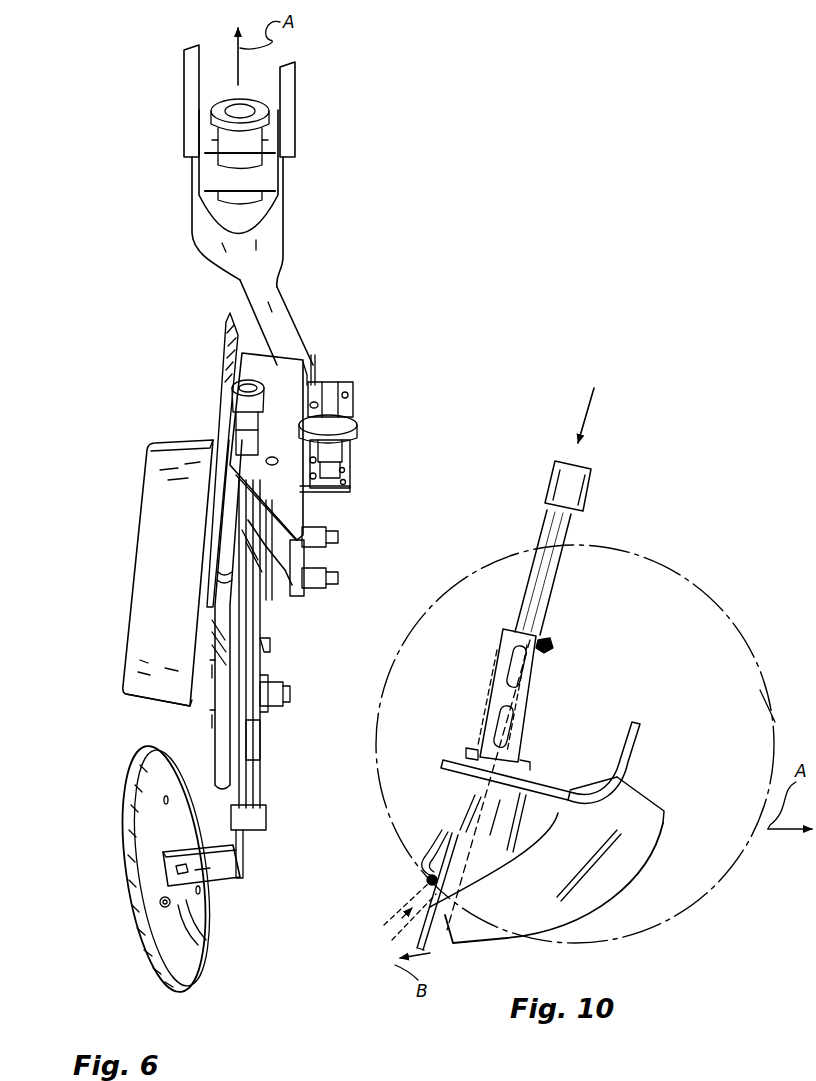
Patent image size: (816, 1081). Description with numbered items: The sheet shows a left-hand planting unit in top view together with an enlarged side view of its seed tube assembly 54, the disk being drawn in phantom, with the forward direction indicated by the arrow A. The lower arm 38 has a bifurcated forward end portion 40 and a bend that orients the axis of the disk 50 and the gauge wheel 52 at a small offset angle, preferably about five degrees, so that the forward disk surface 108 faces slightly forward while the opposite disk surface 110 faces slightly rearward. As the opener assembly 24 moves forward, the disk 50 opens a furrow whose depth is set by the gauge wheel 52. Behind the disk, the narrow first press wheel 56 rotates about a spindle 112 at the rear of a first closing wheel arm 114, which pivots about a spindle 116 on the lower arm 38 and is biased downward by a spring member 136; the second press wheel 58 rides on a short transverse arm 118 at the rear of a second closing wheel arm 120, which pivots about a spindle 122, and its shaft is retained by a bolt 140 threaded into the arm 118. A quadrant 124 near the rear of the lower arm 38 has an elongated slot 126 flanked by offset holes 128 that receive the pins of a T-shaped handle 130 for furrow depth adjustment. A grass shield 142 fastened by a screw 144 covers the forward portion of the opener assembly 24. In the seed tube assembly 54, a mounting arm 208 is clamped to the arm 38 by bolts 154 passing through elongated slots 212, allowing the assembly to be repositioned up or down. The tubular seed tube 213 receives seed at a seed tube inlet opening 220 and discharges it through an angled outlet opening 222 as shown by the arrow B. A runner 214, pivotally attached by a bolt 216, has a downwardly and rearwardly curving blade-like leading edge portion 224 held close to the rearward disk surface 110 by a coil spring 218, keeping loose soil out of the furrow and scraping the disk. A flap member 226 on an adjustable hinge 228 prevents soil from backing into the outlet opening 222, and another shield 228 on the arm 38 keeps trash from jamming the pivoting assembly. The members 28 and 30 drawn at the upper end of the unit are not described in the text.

In FIG. 6, the opener assembly 24 is at (115, 613).
In FIG. 6, the mounting bracket 28 is at (168, 186).
In FIG. 6, the pivot cup 30 is at (296, 106).
In FIG. 6, the lower arm 38 is at (285, 290).
In FIG. 6, the bifurcated forward end portion 40 is at (285, 215).
In FIG. 6, the disk 50 is at (225, 328).
In FIG. 10, the disk 50 is at (702, 915).
In FIG. 6, the gauge wheel 52 is at (125, 523).
In FIG. 10, the seed tube assembly 54 is at (612, 910).
In FIG. 6, the first press wheel 56 is at (212, 752).
In FIG. 6, the second press wheel 58 is at (125, 792).
In FIG. 6, the disk surface 108 is at (240, 373).
In FIG. 6, the opposite disk surface 110 is at (240, 338).
In FIG. 10, the opposite disk surface 110 is at (733, 730).
In FIG. 6, the spindle 112 is at (283, 697).
In FIG. 6, the first closing wheel arm 114 is at (268, 606).
In FIG. 6, the spindle 116 is at (340, 578).
In FIG. 6, the short transverse arm 118 is at (220, 882).
In FIG. 6, the second closing wheel arm 120 is at (248, 858).
In FIG. 6, the spindle 122 is at (340, 535).
In FIG. 6, the quadrant 124 is at (352, 410).
In FIG. 6, the elongated slot 126 is at (350, 395).
In FIG. 6, the offset holes 128 is at (348, 386).
In FIG. 6, the T-shaped handle 130 is at (368, 432).
In FIG. 6, the spring member 136 is at (285, 640).
In FIG. 6, the bolt 140 is at (175, 905).
In FIG. 6, the grass shield 142 is at (272, 376).
In FIG. 6, the screw 144 is at (262, 461).
In FIG. 6, the bolts 154 is at (312, 372).
In FIG. 10, the mounting arm 208 is at (528, 692).
In FIG. 10, the elongated slots 212 is at (525, 664).
In FIG. 10, the seed tube 213 is at (592, 486).
In FIG. 10, the runner 214 is at (668, 819).
In FIG. 10, the bolt 216 is at (470, 752).
In FIG. 10, the spring 218 is at (548, 645).
In FIG. 10, the seed tube inlet opening 220 is at (585, 462).
In FIG. 10, the outlet opening 222 is at (449, 945).
In FIG. 10, the blade-like leading edge portion 224 is at (638, 860).
In FIG. 10, the flap member 226 is at (412, 929).
In FIG. 10, the adjustable hinge 228 is at (638, 724).